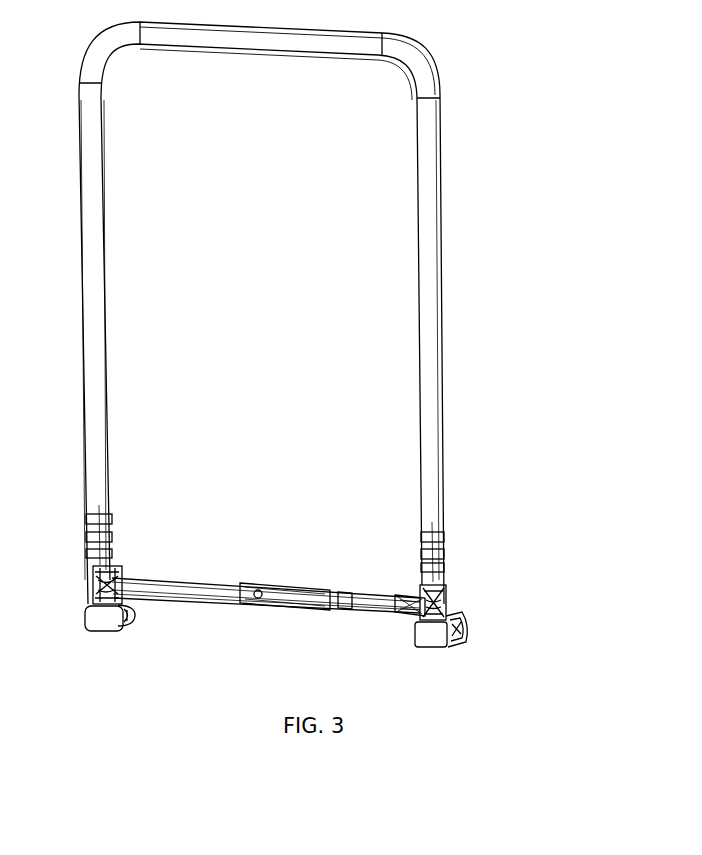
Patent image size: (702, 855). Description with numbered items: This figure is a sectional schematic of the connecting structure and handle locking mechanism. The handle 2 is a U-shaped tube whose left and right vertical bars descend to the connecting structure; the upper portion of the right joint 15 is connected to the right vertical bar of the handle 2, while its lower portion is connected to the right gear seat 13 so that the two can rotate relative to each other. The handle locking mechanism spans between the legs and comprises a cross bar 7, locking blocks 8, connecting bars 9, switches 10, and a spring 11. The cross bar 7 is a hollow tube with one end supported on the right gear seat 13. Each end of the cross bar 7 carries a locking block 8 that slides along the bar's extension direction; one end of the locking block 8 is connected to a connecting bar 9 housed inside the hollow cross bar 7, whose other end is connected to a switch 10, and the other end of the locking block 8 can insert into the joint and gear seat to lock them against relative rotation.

The handle 2 is at (432, 301).
The cross bar 7 is at (190, 600).
The locking block 8 is at (400, 616).
The connecting bar 9 is at (346, 612).
The switch 10 is at (298, 608).
The spring 11 is at (258, 606).
The right gear seat 13 is at (455, 620).
The right joint 15 is at (448, 559).